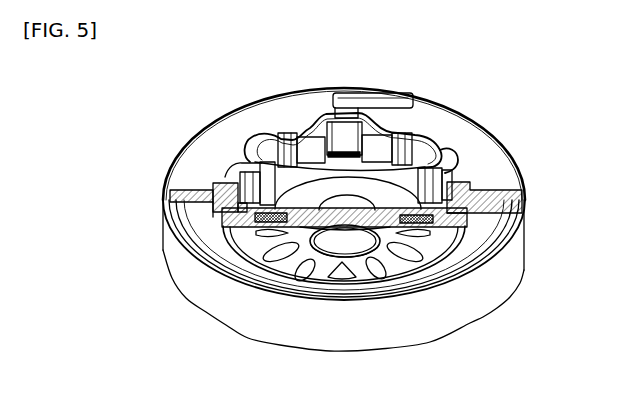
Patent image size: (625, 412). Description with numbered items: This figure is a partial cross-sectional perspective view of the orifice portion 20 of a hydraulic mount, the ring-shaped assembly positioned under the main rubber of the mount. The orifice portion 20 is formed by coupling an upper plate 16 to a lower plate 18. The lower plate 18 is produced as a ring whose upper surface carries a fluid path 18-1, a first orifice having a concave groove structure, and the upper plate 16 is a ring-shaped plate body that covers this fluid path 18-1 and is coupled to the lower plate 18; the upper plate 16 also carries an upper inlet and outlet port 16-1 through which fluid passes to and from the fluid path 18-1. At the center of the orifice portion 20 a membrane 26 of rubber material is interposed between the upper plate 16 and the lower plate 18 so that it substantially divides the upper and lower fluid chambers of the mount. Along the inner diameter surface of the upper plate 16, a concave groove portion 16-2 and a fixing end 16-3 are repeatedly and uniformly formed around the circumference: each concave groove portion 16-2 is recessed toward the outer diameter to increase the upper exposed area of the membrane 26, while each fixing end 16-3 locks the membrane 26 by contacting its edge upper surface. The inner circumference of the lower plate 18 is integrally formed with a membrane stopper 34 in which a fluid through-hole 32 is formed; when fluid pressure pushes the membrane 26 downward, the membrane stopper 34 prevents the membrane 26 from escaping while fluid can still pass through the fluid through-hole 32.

The upper plate 16 is at (188, 168).
The upper inlet and outlet port 16-1 is at (382, 102).
The concave groove portion 16-2 is at (272, 148).
The fixing end 16-3 is at (308, 143).
The lower plate 18 is at (497, 269).
The fluid path 18-1 is at (495, 221).
The orifice portion 20 is at (501, 125).
The membrane 26 is at (273, 207).
The fluid through-hole 32 is at (305, 262).
The membrane stopper 34 is at (363, 278).